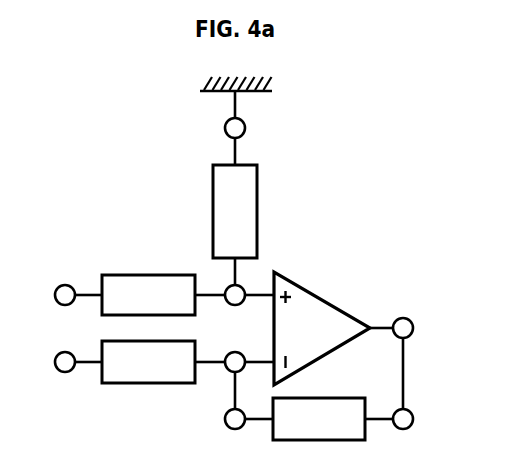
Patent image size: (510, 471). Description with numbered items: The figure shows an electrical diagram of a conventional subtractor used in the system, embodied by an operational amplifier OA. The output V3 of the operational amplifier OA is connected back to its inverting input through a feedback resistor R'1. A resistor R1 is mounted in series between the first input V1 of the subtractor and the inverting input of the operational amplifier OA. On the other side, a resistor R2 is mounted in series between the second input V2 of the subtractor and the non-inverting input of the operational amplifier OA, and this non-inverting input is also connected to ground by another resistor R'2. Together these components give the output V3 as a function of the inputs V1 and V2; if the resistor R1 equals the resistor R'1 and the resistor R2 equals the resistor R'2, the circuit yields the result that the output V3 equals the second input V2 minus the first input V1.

The resistor R'2 is at (235, 211).
The resistor R2 is at (148, 295).
The resistor R1 is at (148, 362).
The resistor R'1 is at (319, 419).
The first input V1 is at (52, 362).
The second input V2 is at (52, 295).
The output V3 is at (416, 328).
The operational amplifier OA is at (322, 328).